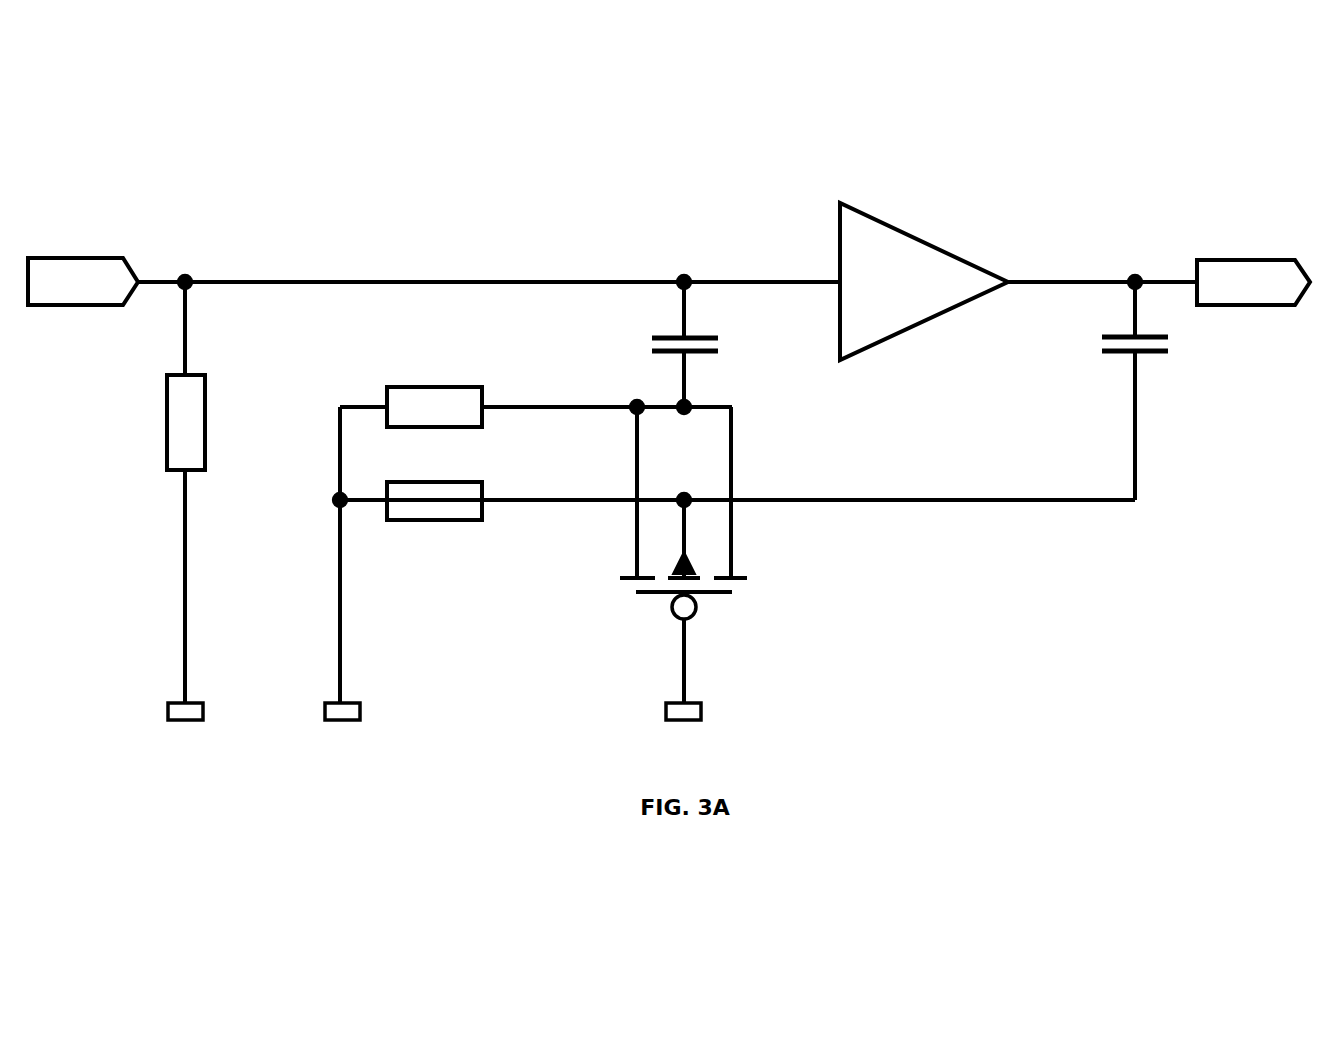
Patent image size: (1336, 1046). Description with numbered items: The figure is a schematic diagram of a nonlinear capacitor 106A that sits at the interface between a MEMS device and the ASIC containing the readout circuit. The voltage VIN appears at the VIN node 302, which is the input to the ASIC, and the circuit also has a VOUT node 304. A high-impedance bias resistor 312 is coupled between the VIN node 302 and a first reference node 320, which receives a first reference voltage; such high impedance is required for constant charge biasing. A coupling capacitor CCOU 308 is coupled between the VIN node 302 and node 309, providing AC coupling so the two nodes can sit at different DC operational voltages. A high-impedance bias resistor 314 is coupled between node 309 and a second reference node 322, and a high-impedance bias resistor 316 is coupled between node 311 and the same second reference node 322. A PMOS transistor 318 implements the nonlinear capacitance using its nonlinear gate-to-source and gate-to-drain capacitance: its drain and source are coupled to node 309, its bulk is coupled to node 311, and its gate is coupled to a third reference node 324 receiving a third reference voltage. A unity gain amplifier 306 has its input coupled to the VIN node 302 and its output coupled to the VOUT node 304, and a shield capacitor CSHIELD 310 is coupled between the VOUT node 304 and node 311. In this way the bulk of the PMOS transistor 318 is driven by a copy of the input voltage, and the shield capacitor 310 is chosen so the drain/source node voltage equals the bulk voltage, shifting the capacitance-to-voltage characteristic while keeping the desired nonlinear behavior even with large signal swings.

The nonlinear capacitor 106A is at (133, 218).
The VIN node 302 is at (192, 276).
The VOUT node 304 is at (1140, 276).
The unity gain amplifier 306 is at (873, 345).
The coupling capacitor CCOU 308 is at (707, 354).
The node 309 is at (530, 409).
The shield capacitor CSHIELD 310 is at (1152, 356).
The node 311 is at (905, 500).
The HighZ bias resistor 312 is at (206, 387).
The HighZ bias resistor 314 is at (486, 392).
The HighZ bias resistor 316 is at (452, 518).
The PMOS transistor 318 is at (630, 582).
The first reference node 320 is at (205, 703).
The second reference node 322 is at (361, 703).
The third reference node 324 is at (703, 710).